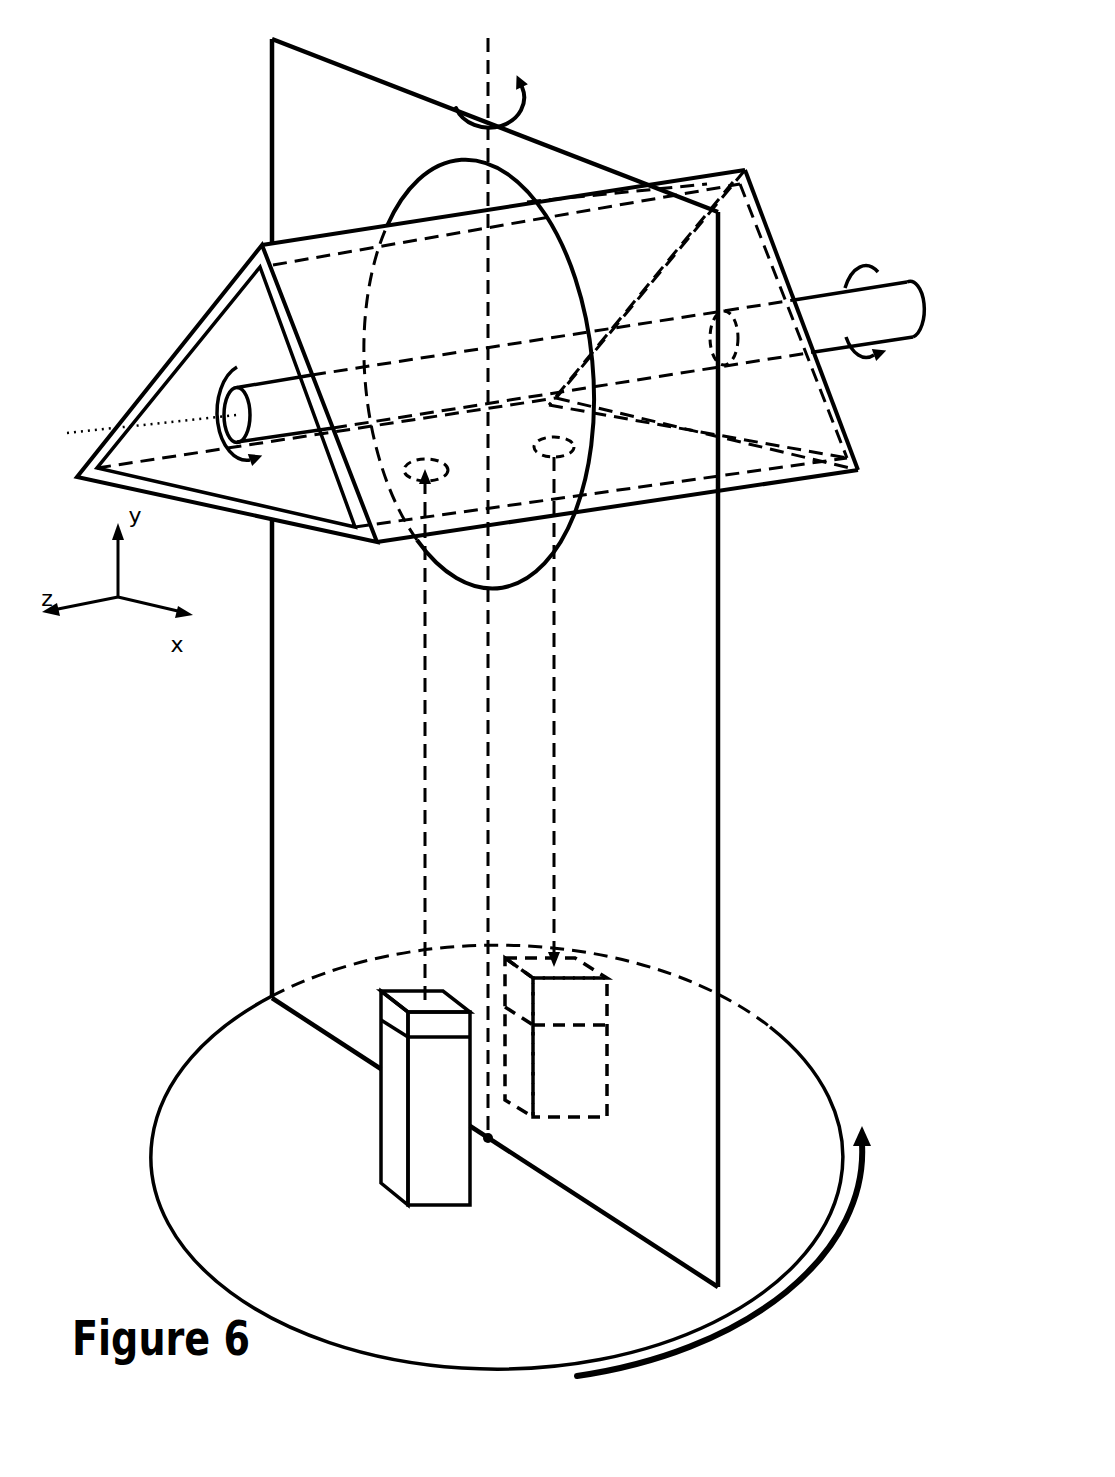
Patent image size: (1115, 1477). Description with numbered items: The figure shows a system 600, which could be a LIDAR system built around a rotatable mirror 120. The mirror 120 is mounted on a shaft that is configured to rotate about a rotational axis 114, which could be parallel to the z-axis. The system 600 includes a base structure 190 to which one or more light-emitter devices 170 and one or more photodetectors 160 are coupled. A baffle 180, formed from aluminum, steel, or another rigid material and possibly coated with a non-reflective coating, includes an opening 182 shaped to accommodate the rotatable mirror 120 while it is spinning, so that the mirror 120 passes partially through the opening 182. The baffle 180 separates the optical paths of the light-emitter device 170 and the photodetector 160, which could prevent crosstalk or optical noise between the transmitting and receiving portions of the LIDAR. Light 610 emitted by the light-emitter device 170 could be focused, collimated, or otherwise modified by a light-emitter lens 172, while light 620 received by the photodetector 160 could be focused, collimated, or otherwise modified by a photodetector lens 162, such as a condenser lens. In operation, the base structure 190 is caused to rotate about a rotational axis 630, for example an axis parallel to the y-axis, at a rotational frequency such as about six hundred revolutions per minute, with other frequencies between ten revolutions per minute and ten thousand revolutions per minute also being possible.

The system 600 is at (893, 126).
The rotational axis 114 is at (98, 430).
The rotatable mirror 120 is at (800, 246).
The photodetector 160 is at (630, 1054).
The photodetector lens 162 is at (610, 963).
The light-emitter device 170 is at (360, 1125).
The light-emitter lens 172 is at (398, 977).
The baffle 180 is at (270, 82).
The opening 182 is at (443, 160).
The base structure 190 is at (190, 1053).
The light 610 is at (420, 692).
The light 620 is at (557, 636).
The rotational axis 630 is at (490, 92).